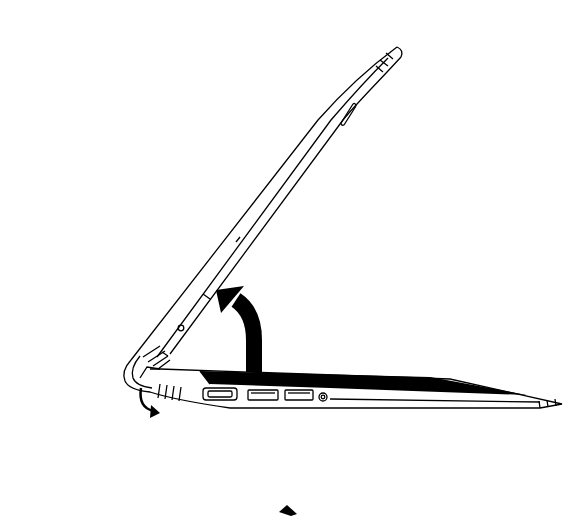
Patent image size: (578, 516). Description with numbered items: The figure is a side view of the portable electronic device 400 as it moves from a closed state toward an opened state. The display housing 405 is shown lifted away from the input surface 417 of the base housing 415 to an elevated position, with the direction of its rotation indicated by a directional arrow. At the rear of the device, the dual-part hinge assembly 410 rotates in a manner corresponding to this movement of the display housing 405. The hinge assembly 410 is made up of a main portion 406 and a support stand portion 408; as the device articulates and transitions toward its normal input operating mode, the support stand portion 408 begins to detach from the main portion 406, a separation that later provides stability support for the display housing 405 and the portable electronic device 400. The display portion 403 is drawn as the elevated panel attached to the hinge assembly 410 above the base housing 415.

The portable electronic device 400 is at (200, 114).
The display portion 403 is at (311, 187).
The display housing 405 is at (236, 242).
The main portion 406 is at (133, 365).
The support stand portion 408 is at (134, 383).
The hinge assembly 410 is at (136, 355).
The base housing 415 is at (529, 398).
The input surface 417 is at (343, 364).